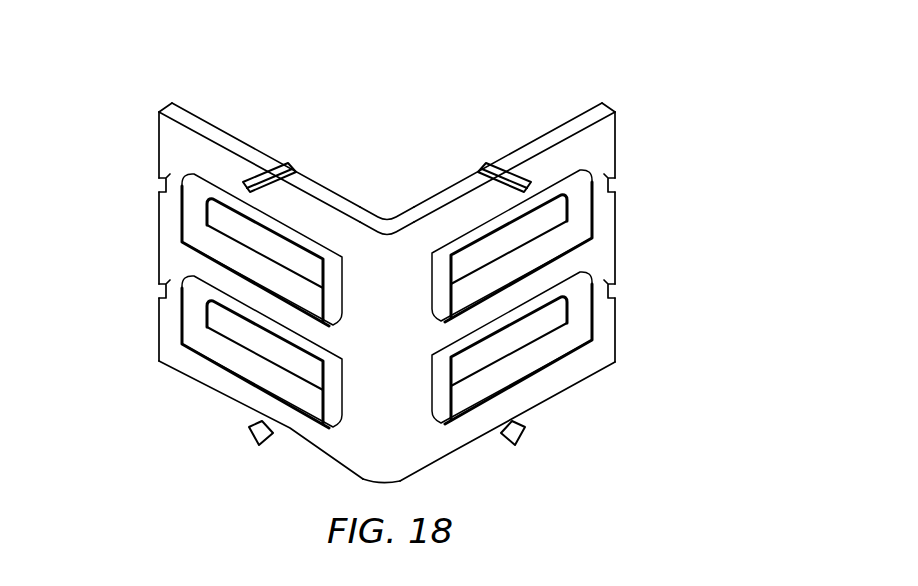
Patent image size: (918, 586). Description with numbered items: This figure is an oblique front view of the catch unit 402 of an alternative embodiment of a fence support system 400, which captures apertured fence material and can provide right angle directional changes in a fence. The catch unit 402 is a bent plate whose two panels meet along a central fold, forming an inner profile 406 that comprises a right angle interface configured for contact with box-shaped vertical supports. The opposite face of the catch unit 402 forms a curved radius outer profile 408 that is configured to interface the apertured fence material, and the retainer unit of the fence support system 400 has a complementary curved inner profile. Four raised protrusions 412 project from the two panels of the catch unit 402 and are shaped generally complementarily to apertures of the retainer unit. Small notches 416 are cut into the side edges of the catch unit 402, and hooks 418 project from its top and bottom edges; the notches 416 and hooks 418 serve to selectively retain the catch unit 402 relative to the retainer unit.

The fence support system 400 is at (712, 86).
The catch unit 402 is at (603, 107).
The inner profile 406 is at (368, 208).
The curved radius outer profile 408 is at (403, 481).
The protrusions 412 is at (190, 230).
The notches 416 is at (158, 195).
The hooks 418 is at (273, 164).